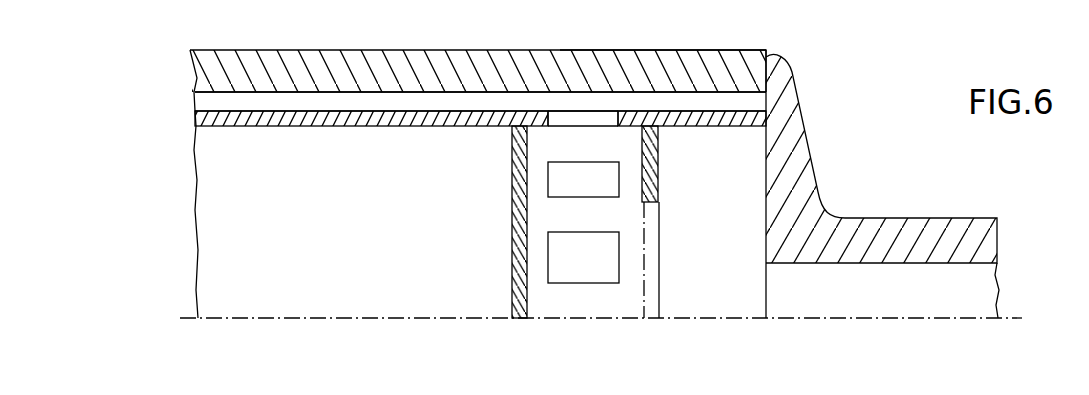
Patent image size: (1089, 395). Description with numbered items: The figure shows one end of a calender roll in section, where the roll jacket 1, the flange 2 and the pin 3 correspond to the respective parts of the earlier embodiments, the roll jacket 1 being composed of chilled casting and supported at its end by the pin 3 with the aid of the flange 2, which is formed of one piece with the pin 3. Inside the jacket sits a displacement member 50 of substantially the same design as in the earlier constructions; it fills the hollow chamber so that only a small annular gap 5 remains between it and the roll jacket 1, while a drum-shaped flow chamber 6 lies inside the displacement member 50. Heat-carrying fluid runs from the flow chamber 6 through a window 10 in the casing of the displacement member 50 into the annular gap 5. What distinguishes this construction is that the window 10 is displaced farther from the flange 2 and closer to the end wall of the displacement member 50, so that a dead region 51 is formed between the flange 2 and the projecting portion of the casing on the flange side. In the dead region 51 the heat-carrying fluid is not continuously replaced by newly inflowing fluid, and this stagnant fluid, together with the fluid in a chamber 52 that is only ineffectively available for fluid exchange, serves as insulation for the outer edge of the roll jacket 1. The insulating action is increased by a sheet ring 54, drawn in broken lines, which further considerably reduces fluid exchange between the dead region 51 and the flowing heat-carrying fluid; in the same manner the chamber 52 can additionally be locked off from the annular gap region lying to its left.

The roll jacket 1 is at (395, 62).
The chamber 52 is at (636, 65).
The annular gap 5 is at (334, 100).
The displacement member 50 is at (453, 115).
The window 10 is at (597, 116).
The sheet ring 54 is at (654, 186).
The dead region 51 is at (703, 177).
The flow chamber 6 is at (723, 290).
The flange 2 is at (800, 108).
The pin 3 is at (899, 237).